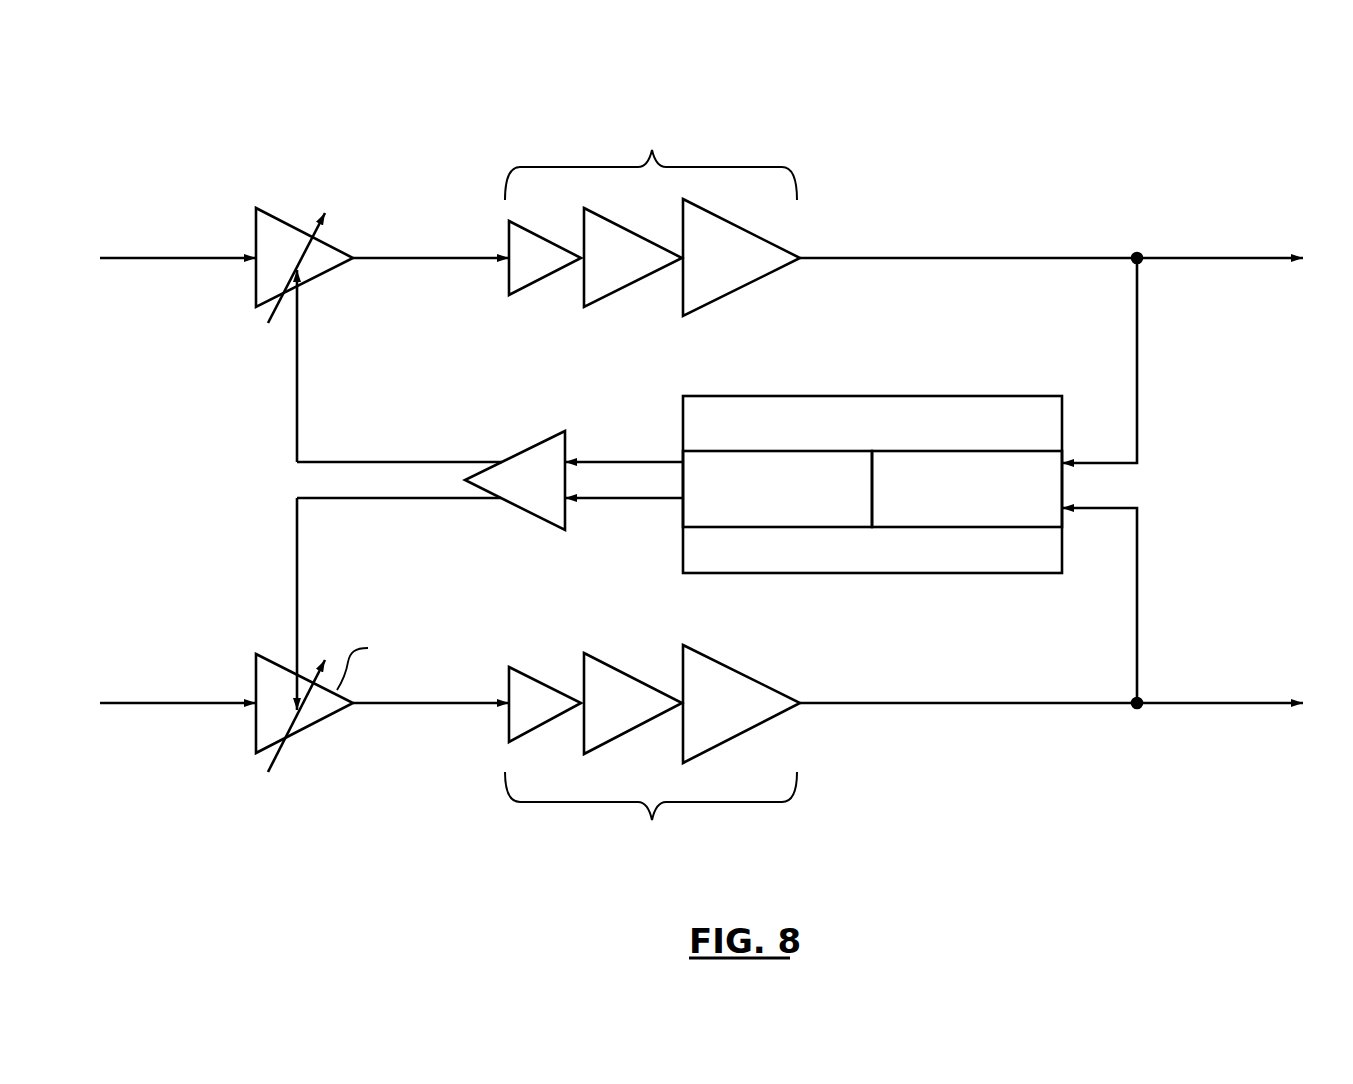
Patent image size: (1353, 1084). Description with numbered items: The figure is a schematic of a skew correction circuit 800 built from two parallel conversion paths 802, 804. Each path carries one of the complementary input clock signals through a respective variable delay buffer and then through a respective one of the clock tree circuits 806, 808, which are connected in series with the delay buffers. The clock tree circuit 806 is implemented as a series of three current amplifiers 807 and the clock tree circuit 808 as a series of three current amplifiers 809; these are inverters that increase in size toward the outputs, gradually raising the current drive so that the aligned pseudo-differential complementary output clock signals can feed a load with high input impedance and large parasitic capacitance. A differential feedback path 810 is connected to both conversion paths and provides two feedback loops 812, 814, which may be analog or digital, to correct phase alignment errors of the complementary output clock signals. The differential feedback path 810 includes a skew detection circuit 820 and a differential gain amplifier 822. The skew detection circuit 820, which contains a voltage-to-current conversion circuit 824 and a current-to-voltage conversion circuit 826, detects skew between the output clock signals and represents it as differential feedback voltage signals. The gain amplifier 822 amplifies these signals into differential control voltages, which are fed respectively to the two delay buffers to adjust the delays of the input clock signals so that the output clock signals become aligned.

The skew correction circuit 800 is at (239, 72).
The parallel conversion path 802 is at (358, 153).
The parallel conversion path 804 is at (371, 792).
The clock tree circuit 806 is at (787, 216).
The current amplifiers 807 is at (543, 278).
The clock tree circuit 808 is at (752, 656).
The current amplifiers 809 is at (549, 686).
The differential feedback path 810 is at (939, 346).
The feedback loop 812 is at (1174, 357).
The feedback loop 814 is at (1162, 587).
The skew detection circuit 820 is at (996, 396).
The differential gain amplifier 822 is at (542, 442).
The voltage-to-current conversion circuit 824 is at (976, 528).
The current-to-voltage conversion circuit 826 is at (778, 528).